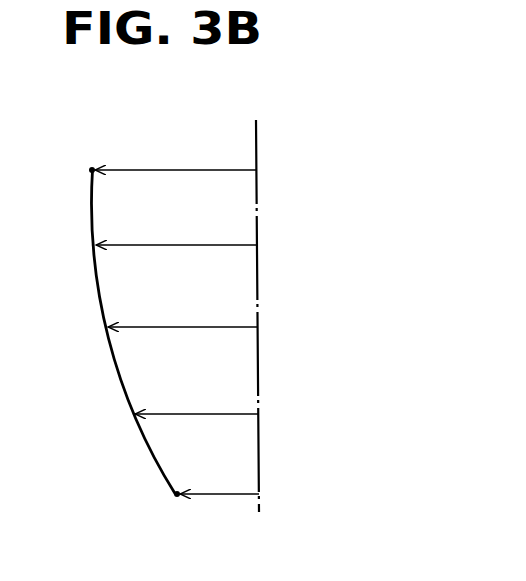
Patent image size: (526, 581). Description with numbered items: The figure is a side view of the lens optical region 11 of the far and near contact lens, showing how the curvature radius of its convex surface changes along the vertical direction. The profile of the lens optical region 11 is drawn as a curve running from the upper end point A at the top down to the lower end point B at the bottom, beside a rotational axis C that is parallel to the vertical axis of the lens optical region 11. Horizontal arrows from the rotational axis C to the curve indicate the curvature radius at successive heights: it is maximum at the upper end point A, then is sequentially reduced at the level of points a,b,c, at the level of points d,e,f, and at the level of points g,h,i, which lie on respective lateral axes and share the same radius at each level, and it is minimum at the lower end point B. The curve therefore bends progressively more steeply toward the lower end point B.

The lens optical region 11 is at (136, 459).
The upper end point A is at (86, 168).
The lower end point B is at (174, 501).
The rotational axis C is at (252, 301).
The points a, b and c a,b,c is at (64, 245).
The points d, e and f d,e,f is at (79, 328).
The points g, h and i g,h,i is at (108, 415).